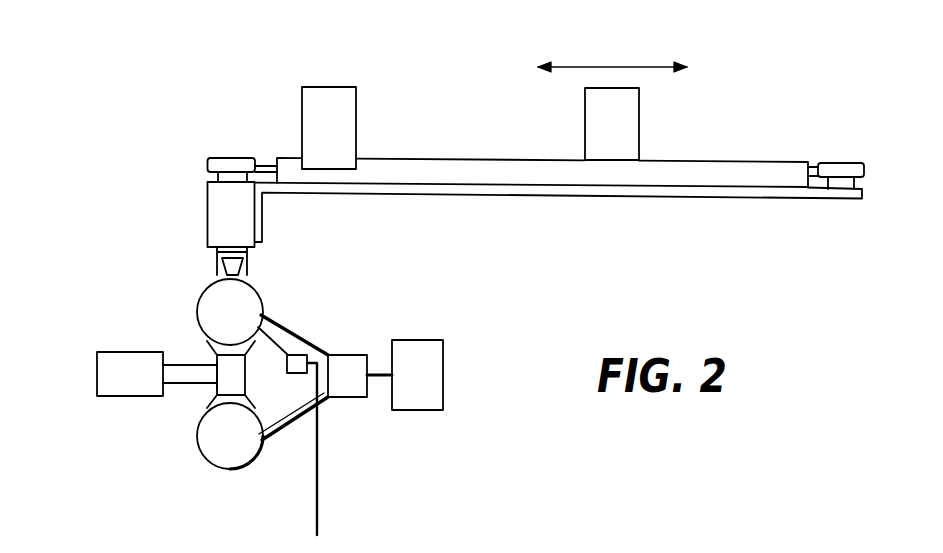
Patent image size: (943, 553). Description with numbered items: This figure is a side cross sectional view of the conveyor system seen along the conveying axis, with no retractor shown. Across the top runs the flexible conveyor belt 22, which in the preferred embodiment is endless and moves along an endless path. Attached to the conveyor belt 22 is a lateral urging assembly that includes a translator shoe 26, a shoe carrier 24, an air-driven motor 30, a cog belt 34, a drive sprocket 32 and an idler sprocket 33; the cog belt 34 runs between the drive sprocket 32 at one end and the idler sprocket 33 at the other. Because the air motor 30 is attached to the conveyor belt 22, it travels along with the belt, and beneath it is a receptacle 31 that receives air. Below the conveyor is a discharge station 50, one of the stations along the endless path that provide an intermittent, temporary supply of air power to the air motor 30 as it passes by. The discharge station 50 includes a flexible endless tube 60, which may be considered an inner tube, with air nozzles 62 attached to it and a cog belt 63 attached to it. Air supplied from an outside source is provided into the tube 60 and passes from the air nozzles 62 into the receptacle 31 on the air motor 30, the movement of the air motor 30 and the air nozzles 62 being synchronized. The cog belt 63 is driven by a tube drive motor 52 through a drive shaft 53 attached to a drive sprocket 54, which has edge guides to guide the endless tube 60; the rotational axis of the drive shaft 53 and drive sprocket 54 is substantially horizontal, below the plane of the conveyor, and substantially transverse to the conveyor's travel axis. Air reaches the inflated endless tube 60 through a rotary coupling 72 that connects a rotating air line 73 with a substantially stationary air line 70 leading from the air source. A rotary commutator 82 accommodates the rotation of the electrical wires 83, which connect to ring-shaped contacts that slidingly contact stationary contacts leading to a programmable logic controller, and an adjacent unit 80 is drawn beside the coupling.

The flexible conveyor belt 22 is at (513, 193).
The shoe carrier 24 is at (423, 170).
The translator shoe 26 is at (328, 98).
The air-driven motor 30 is at (223, 212).
The receptacle 31 is at (217, 260).
The drive sprocket 32 is at (230, 158).
The idler sprocket 33 is at (840, 163).
The cog belt 34 is at (265, 165).
The discharge station 50 is at (104, 331).
The tube drive motor 52 is at (120, 360).
The drive shaft 53 is at (187, 376).
The drive sprocket 54 is at (217, 386).
The flexible endless tube 60 is at (231, 458).
The air nozzle 62 is at (236, 274).
The cog belt 63 is at (220, 349).
The stationary air line 70 is at (318, 462).
The rotary coupling 72 is at (350, 360).
The rotating air line 73 is at (278, 348).
The drive unit 80 is at (428, 366).
The rotary commutator 82 is at (347, 392).
The electrical wires 83 is at (277, 431).